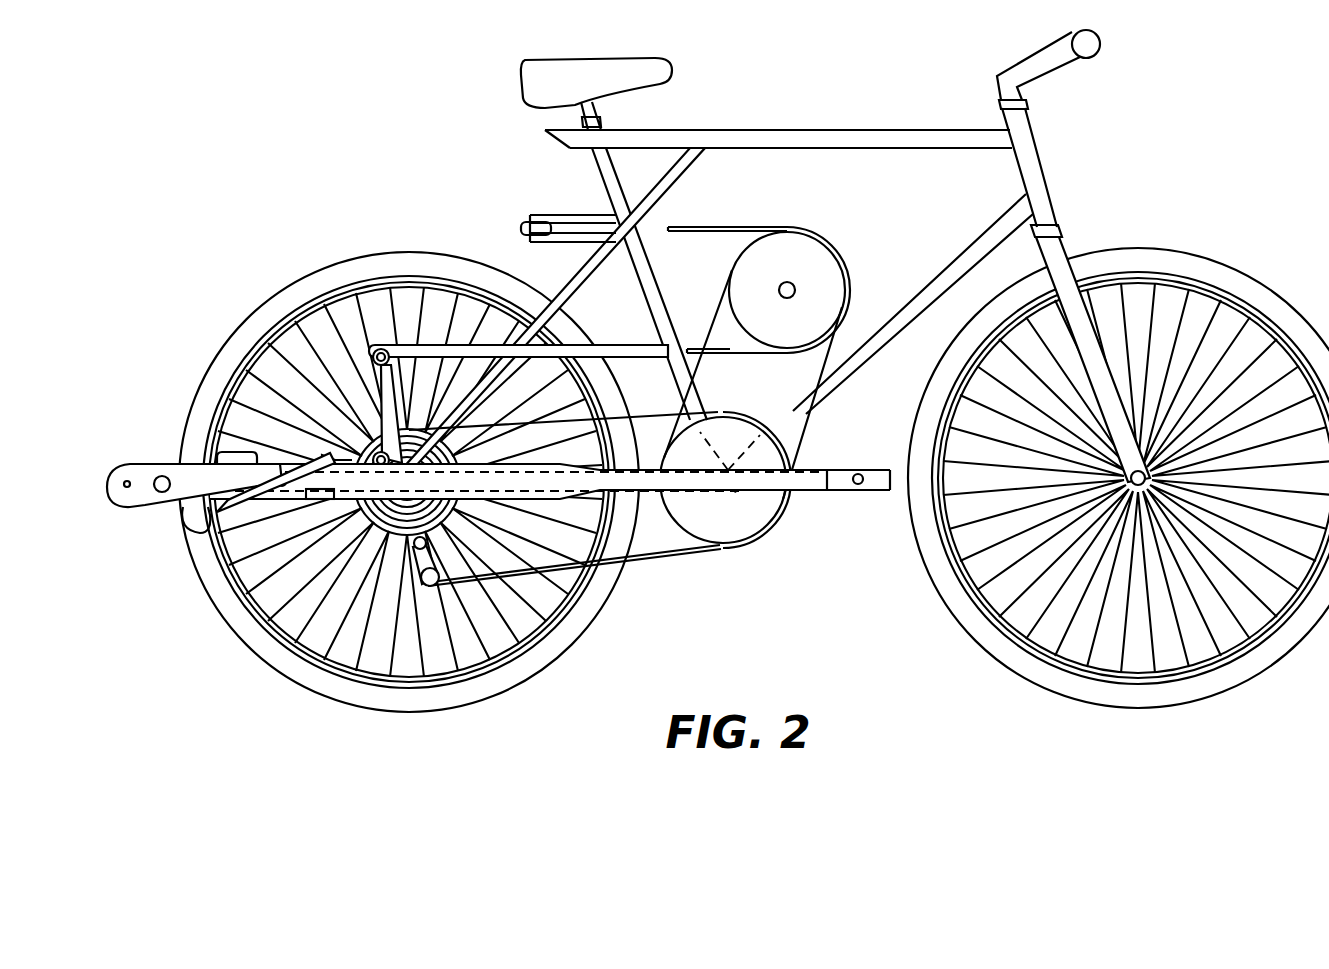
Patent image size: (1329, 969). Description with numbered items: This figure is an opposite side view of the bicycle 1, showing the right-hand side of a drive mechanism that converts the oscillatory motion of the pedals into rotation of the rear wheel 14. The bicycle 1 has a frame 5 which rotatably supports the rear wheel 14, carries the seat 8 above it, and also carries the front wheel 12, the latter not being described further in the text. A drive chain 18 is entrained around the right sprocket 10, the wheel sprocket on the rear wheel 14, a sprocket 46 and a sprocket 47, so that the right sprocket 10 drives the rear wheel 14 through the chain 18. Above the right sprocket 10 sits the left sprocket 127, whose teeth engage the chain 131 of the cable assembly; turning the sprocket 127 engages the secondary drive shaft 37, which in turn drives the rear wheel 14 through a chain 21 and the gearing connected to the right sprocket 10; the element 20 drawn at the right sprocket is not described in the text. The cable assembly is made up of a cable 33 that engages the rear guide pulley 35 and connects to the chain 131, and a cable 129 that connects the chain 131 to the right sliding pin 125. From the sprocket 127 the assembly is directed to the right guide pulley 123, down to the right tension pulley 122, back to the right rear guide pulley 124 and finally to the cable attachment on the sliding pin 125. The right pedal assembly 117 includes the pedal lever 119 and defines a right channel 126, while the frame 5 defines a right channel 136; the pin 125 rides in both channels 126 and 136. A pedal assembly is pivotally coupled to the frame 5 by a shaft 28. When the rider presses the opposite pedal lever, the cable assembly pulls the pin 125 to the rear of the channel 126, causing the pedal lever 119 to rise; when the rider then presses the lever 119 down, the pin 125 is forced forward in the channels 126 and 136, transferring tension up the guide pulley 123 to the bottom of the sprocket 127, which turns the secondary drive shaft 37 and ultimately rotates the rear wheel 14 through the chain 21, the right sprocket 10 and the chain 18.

The bicycle 1 is at (756, 644).
The frame 5 is at (930, 262).
The seat 8 is at (522, 92).
The right sprocket 10 is at (750, 515).
The front wheel 12 is at (1250, 268).
The rear wheel 14 is at (318, 272).
The chain 18 is at (570, 368).
The drive belt 20 is at (730, 415).
The chain 21 is at (708, 312).
The shaft 28 is at (162, 476).
The cable 33 is at (583, 222).
The rear guide pulley 35 is at (525, 222).
The secondary drive shaft 37 is at (783, 282).
The sprocket 46 is at (410, 570).
The sprocket 47 is at (440, 566).
The right pedal assembly 117 is at (815, 500).
The pedal lever 119 is at (823, 468).
The right tension pulley 122 is at (343, 450).
The right guide pulley 123 is at (379, 349).
The right rear guide pulley 124 is at (118, 508).
The right sliding pin 125 is at (258, 452).
The right channel 126 is at (245, 518).
The left sprocket 127 is at (825, 282).
The cable 129 is at (628, 345).
The chain 131 is at (722, 227).
The right channel 136 is at (330, 502).